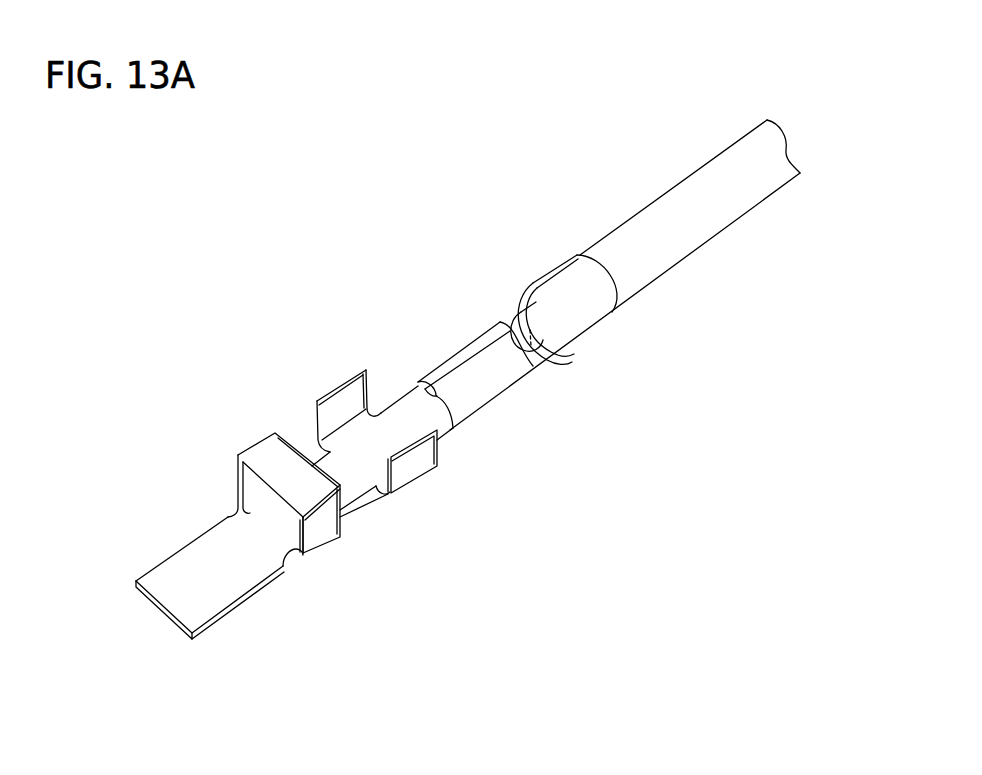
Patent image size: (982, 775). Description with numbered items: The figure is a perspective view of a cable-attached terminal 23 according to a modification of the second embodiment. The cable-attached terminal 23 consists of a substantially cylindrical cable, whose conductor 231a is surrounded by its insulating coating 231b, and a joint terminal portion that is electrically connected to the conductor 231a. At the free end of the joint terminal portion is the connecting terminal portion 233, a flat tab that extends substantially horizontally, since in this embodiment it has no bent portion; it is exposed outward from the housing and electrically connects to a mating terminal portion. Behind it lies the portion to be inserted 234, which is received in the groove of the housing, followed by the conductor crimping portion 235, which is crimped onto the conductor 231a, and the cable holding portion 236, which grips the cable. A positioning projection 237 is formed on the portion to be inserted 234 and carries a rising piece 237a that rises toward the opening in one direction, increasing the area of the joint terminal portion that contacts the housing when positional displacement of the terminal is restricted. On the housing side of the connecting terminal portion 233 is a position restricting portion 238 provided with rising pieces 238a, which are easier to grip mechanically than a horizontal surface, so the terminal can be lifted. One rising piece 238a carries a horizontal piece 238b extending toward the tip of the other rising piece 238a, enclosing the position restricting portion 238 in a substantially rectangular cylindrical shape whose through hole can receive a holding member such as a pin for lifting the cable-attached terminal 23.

The cable-attached terminal 23 is at (649, 292).
The conductor 231a is at (552, 362).
The insulating coating 231b is at (725, 208).
The connecting terminal portion 233 is at (227, 566).
The portion to be inserted 234 is at (367, 448).
The conductor crimping portion 235 is at (467, 351).
The cable holding portion 236 is at (561, 270).
The positioning projection 237 is at (317, 443).
The rising piece 237a is at (338, 388).
The position restricting portion 238 is at (290, 558).
The rising piece 238a is at (238, 487).
The horizontal piece 238b is at (272, 500).